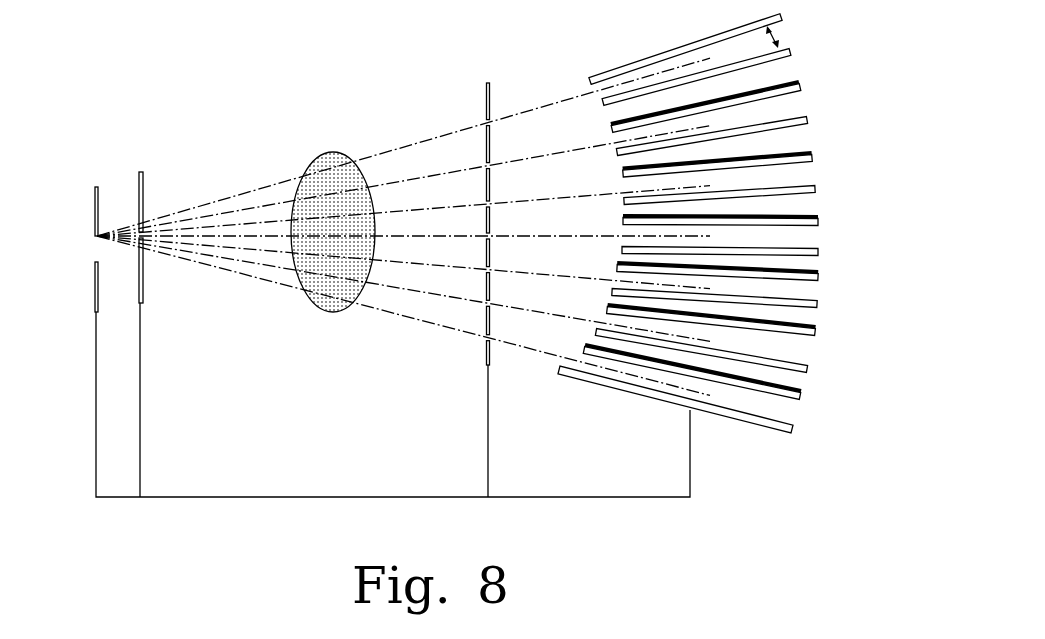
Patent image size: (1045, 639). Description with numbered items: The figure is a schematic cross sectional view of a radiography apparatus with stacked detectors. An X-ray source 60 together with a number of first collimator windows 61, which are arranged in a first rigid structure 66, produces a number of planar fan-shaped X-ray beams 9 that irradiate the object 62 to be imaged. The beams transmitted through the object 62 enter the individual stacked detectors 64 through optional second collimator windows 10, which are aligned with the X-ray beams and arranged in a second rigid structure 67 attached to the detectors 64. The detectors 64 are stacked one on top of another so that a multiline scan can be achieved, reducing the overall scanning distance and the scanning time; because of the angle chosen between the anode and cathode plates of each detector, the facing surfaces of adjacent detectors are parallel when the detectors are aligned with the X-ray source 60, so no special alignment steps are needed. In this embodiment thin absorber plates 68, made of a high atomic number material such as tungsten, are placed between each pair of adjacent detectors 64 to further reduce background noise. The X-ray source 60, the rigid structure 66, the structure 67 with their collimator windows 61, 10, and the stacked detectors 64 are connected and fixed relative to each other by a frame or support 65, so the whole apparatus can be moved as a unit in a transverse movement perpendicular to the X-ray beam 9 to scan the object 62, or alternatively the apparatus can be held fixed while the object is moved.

The planar fan-shaped X-ray beams 9 is at (360, 160).
The second collimator windows 10 is at (482, 273).
The X-ray source 60 is at (90, 240).
The first collimator windows 61 is at (142, 231).
The object 62 is at (317, 302).
The detectors 64 is at (781, 2).
The frame or support 65 is at (250, 497).
The first rigid structure 66 is at (142, 172).
The second rigid structure 67 is at (490, 95).
The absorber plates 68 is at (812, 88).